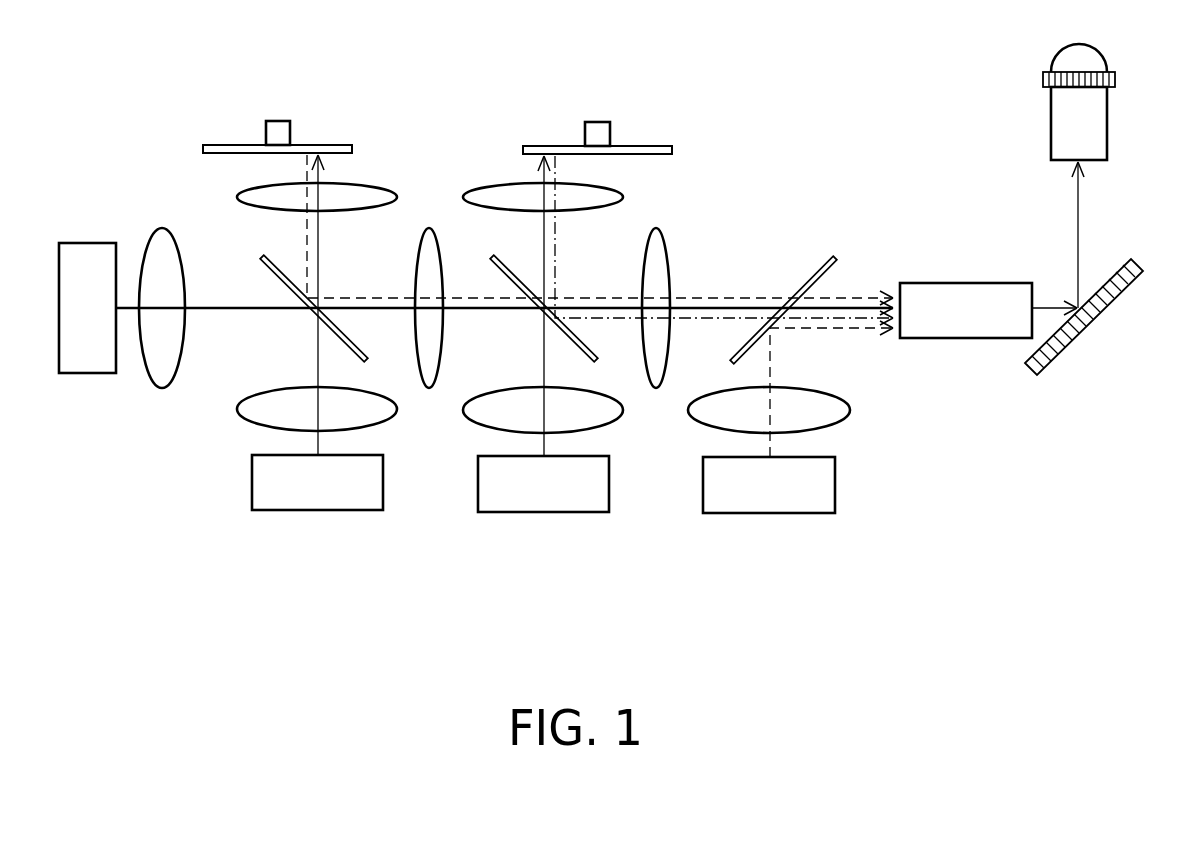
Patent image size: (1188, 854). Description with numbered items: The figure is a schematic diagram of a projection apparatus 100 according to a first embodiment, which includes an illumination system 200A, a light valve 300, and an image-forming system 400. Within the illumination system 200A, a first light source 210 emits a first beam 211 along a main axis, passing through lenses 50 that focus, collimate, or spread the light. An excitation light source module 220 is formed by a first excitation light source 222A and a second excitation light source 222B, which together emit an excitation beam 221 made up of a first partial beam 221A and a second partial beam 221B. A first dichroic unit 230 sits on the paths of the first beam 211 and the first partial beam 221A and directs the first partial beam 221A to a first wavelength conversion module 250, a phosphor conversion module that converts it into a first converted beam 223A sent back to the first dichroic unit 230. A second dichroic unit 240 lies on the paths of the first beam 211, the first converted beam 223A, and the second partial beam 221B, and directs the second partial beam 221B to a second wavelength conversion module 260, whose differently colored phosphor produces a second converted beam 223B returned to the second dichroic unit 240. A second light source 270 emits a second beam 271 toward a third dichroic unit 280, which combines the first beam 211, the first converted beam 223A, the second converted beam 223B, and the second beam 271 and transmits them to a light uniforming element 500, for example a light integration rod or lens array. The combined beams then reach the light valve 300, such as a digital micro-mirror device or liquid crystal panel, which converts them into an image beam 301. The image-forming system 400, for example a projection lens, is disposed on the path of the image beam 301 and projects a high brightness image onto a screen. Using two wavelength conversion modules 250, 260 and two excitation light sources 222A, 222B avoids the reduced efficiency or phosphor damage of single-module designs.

The projection apparatus 100 is at (1187, 667).
The illumination system 200A is at (827, 178).
The first light source 210 is at (93, 257).
The first beam 211 is at (227, 313).
The lenses 50 is at (162, 242).
The first dichroic unit 230 is at (278, 282).
The second dichroic unit 240 is at (507, 282).
The third dichroic unit 280 is at (813, 277).
The excitation beam 221 is at (437, 190).
The first partial beam 221A is at (320, 174).
The second partial beam 221B is at (542, 175).
The first wavelength conversion module 250 is at (266, 135).
The second wavelength conversion module 260 is at (605, 135).
The first converted beam 223A is at (307, 165).
The second converted beam 223B is at (590, 257).
The excitation light source module 220 is at (467, 453).
The first excitation light source 222A is at (370, 482).
The second excitation light source 222B is at (597, 483).
The second light source 270 is at (822, 483).
The second beam 271 is at (770, 370).
The light uniforming element 500 is at (985, 297).
The light valve 300 is at (1087, 313).
The image beam 301 is at (1080, 212).
The image-forming system 400 is at (1098, 146).